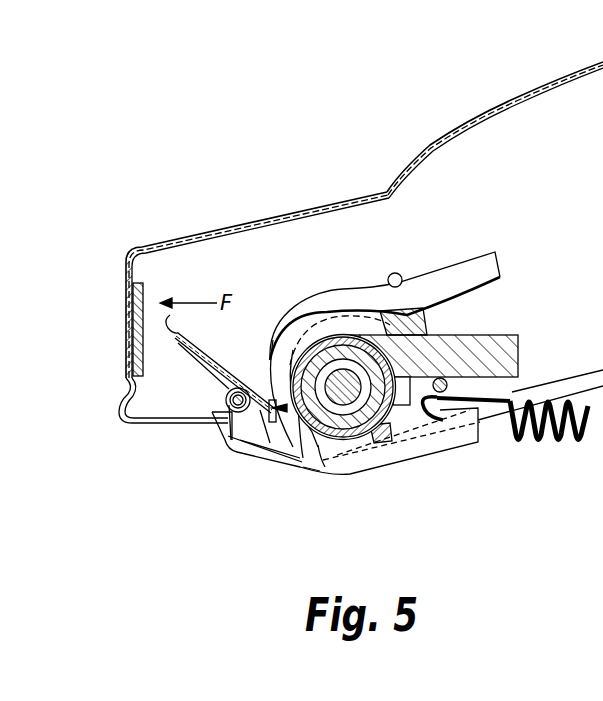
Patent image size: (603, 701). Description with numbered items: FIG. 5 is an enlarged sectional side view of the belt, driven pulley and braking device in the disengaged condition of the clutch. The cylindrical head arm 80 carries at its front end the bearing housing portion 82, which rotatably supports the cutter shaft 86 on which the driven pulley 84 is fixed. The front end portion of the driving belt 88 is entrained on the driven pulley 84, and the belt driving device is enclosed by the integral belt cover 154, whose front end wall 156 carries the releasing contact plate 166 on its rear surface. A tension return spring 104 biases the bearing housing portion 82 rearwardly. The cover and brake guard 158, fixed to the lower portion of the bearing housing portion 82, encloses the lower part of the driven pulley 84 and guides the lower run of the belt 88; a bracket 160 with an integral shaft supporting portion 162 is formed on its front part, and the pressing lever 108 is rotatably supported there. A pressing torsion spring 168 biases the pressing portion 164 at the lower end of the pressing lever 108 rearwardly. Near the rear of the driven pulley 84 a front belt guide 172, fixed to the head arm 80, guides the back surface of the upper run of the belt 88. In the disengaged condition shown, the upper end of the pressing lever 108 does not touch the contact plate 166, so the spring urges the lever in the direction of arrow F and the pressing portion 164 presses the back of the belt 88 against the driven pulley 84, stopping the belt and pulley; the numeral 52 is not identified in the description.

The latch assembly 52 is at (197, 477).
The head arm 80 is at (497, 350).
The bearing housing portion 82 is at (292, 332).
The driven pulley 84 is at (325, 320).
The cutter shaft 86 is at (355, 318).
The driving belt 88 is at (495, 268).
The tension return spring 104 is at (538, 444).
The pressing lever 108 is at (200, 343).
The belt cover 154 is at (483, 112).
The front end wall 156 is at (126, 269).
The cover and brake guard 158 is at (280, 463).
The bracket 160 is at (247, 447).
The shaft supporting portion 162 is at (247, 423).
The pressing portion 164 is at (305, 463).
The releasing contact plate 166 is at (147, 292).
The pressing torsion spring 168 is at (228, 387).
The front belt guide 172 is at (398, 272).